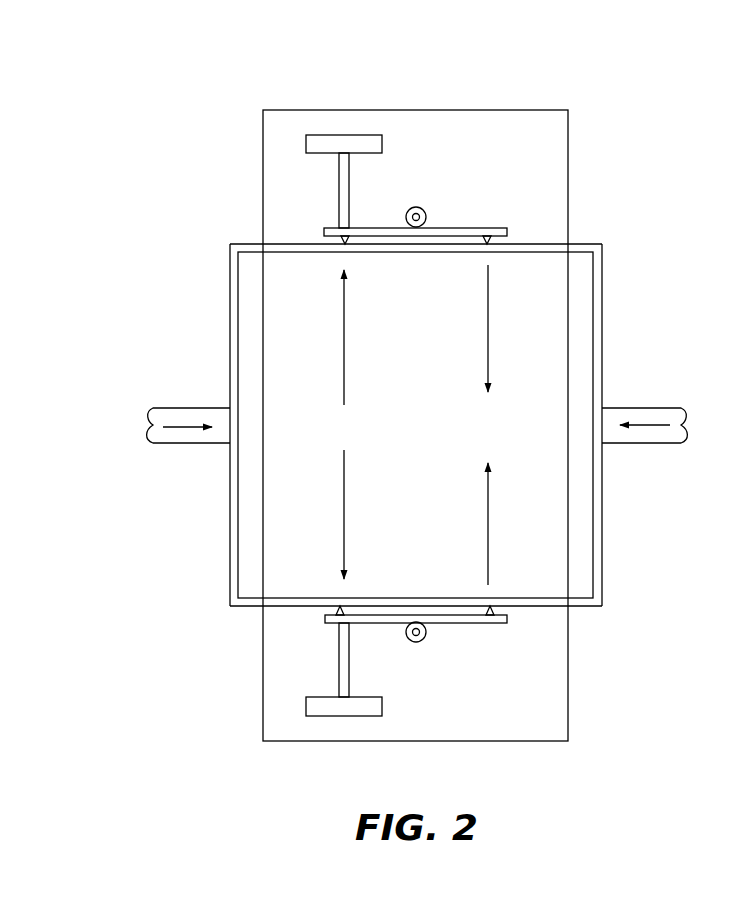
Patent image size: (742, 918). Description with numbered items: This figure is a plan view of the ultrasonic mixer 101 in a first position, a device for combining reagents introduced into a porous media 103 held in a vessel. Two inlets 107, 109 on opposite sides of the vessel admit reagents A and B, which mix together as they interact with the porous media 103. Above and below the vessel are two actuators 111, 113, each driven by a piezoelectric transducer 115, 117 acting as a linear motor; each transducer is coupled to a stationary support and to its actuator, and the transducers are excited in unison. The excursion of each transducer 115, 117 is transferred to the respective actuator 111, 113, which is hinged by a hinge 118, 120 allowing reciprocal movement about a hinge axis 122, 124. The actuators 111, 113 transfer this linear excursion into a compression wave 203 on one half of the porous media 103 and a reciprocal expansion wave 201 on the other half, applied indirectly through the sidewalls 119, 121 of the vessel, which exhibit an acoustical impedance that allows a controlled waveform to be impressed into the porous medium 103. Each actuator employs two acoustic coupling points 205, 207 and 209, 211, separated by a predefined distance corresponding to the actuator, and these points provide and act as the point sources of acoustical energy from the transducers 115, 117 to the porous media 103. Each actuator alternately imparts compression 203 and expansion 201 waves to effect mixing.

The mixer 101 is at (200, 146).
The porous media 103 is at (298, 318).
The inlet 107 is at (183, 408).
The inlet 109 is at (648, 443).
The actuator 111 is at (463, 624).
The actuator 113 is at (470, 228).
The piezoelectric transducer 115 is at (349, 673).
The piezoelectric transducer 117 is at (349, 180).
The hinge 118 is at (433, 643).
The sidewall 119 is at (546, 606).
The hinge 120 is at (432, 209).
The sidewall 121 is at (552, 245).
The hinge axis 122 is at (417, 622).
The hinge axis 124 is at (416, 227).
The expansion wave 201 is at (346, 424).
The compression wave 203 is at (488, 425).
The acoustic coupling point 205 is at (340, 243).
The acoustic coupling point 207 is at (490, 241).
The acoustic coupling point 209 is at (340, 611).
The acoustic coupling point 211 is at (490, 611).